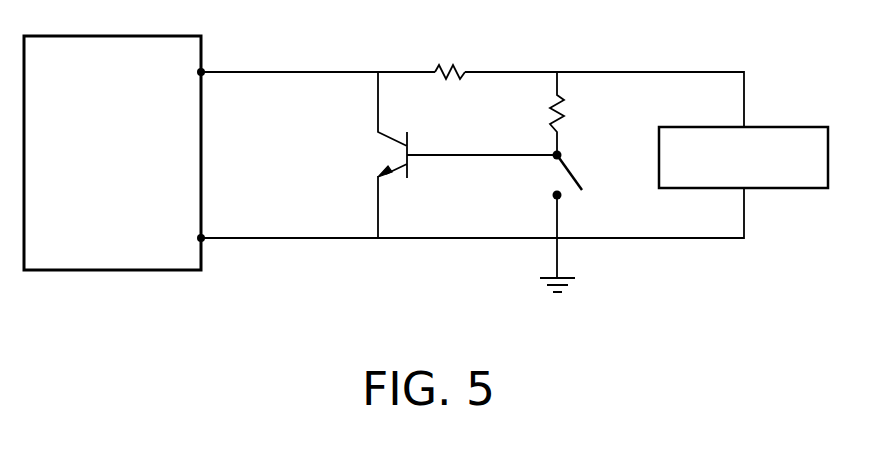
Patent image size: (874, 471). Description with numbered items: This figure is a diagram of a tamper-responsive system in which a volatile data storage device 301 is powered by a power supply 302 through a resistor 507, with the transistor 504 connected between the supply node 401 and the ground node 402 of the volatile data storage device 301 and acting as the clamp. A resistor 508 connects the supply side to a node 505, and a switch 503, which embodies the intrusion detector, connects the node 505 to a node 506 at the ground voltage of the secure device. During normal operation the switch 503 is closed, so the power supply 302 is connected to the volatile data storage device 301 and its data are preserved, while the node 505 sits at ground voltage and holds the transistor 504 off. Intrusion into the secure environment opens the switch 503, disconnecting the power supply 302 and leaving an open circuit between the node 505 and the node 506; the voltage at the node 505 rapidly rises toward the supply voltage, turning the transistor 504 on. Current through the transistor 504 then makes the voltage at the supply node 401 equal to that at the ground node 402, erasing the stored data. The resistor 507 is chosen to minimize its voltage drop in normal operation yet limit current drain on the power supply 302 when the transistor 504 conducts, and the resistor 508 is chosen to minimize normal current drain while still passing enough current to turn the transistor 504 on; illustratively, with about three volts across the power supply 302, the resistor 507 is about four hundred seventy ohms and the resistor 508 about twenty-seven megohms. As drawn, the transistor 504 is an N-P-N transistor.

The volatile data storage device 301 is at (105, 272).
The power supply 302 is at (786, 124).
The supply node 401 is at (204, 74).
The ground node 402 is at (204, 240).
The switch 503 is at (574, 175).
The transistor 504 is at (409, 172).
The node 505 is at (561, 152).
The node 506 is at (561, 198).
The resistor 507 is at (455, 66).
The resistor 508 is at (566, 104).